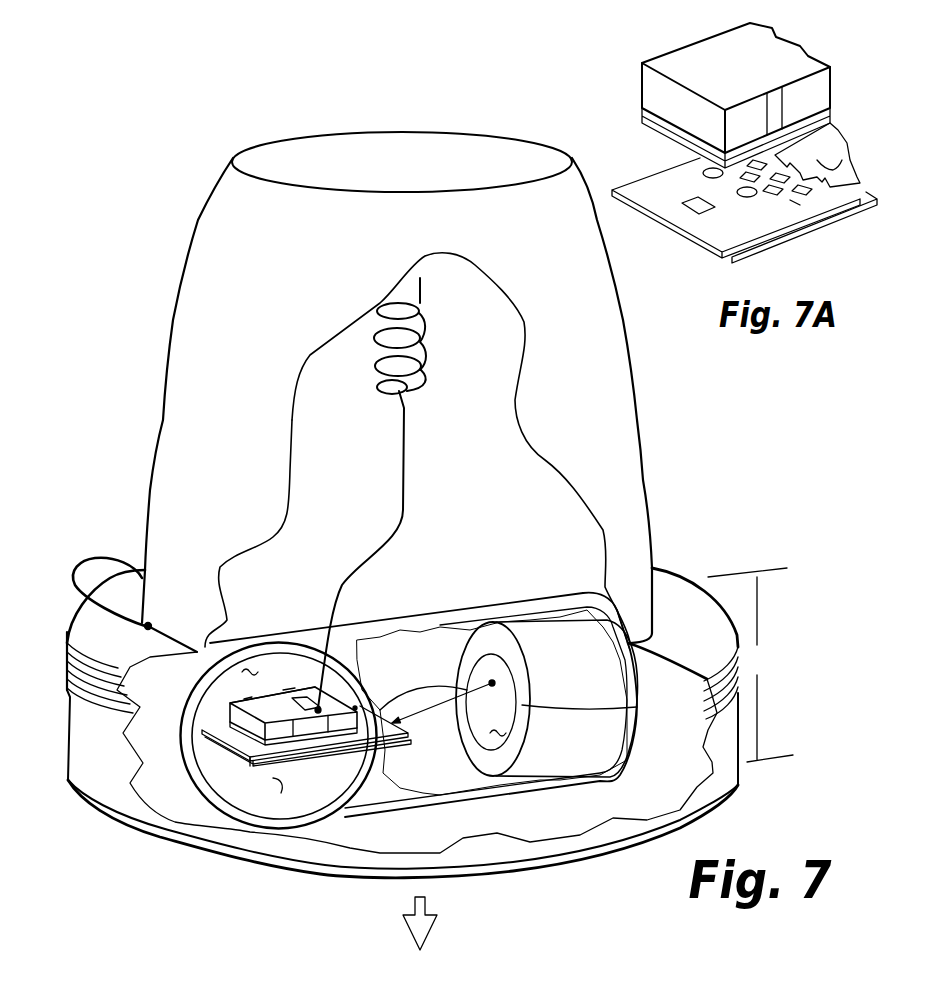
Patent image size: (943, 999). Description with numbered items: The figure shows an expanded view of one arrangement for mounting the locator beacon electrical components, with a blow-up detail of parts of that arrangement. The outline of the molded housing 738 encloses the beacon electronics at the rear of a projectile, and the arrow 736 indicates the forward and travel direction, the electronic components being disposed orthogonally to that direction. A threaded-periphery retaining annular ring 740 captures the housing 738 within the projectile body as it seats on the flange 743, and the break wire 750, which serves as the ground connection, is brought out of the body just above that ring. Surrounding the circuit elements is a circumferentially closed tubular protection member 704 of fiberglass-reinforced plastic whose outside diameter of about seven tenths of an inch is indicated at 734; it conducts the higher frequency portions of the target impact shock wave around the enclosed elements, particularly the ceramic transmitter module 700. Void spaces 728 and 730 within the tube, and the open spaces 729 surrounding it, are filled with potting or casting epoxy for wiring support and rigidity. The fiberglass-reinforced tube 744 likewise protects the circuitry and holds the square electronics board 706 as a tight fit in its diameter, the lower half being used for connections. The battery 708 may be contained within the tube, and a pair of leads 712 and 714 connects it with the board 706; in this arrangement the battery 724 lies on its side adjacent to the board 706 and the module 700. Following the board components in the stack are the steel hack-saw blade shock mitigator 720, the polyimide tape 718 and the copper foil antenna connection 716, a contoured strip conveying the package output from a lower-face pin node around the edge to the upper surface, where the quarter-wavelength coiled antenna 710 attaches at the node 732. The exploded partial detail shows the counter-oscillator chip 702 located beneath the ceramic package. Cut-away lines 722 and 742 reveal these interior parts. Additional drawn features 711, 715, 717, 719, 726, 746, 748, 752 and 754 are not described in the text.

In FIG. 7A, the ceramic transmitter module 700 is at (683, 50).
In FIG. 7, the ceramic transmitter module 700 is at (230, 700).
In FIG. 7A, the counter-oscillator circuit chip 702 is at (688, 200).
In FIG. 7, the tubular protection member 704 is at (330, 833).
In FIG. 7A, the electronics board 706 is at (727, 256).
In FIG. 7, the electronics board 706 is at (255, 764).
In FIG. 7, the battery 708 is at (527, 622).
In FIG. 7, the antenna 710 is at (423, 323).
In FIG. 7, the lens mid-line 711 is at (557, 710).
In FIG. 7, the lead 712 is at (445, 683).
In FIG. 7, the lead 714 is at (423, 708).
In FIG. 7, the board support 715 is at (277, 750).
In FIG. 7, the copper foil antenna connection 716 is at (345, 760).
In FIG. 7, the module top edge 717 is at (258, 695).
In FIG. 7, the polyimide plastic tape 718 is at (230, 720).
In FIG. 7, the contact pad 719 is at (290, 688).
In FIG. 7, the steel shock mitigator 720 is at (250, 757).
In FIG. 7, the cut-away line 722 is at (515, 783).
In FIG. 7, the battery 724 is at (503, 735).
In FIG. 7, the housing end wall 726 is at (640, 683).
In FIG. 7, the void space 728 is at (272, 795).
In FIG. 7, the open space 729 is at (171, 634).
In FIG. 7, the void space 730 is at (252, 665).
In FIG. 7, the antenna node 732 is at (318, 706).
In FIG. 7, the outside diameter dimension 734 is at (750, 665).
In FIG. 7, the forward direction arrow 736 is at (430, 905).
In FIG. 7, the molded housing 738 is at (630, 345).
In FIG. 7, the retaining annular ring 740 is at (677, 570).
In FIG. 7, the cut-away line 742 is at (607, 532).
In FIG. 7, the flange 743 is at (68, 732).
In FIG. 7, the fiberglass-reinforced tube 744 is at (497, 603).
In FIG. 7A, the lower board layer 746 is at (768, 245).
In FIG. 7A, the flex circuit 748 is at (860, 205).
In FIG. 7A, the break wire 750 is at (757, 197).
In FIG. 7, the break wire 750 is at (93, 558).
In FIG. 7A, the adhesive layer 752 is at (700, 162).
In FIG. 7A, the trace region 754 is at (788, 199).